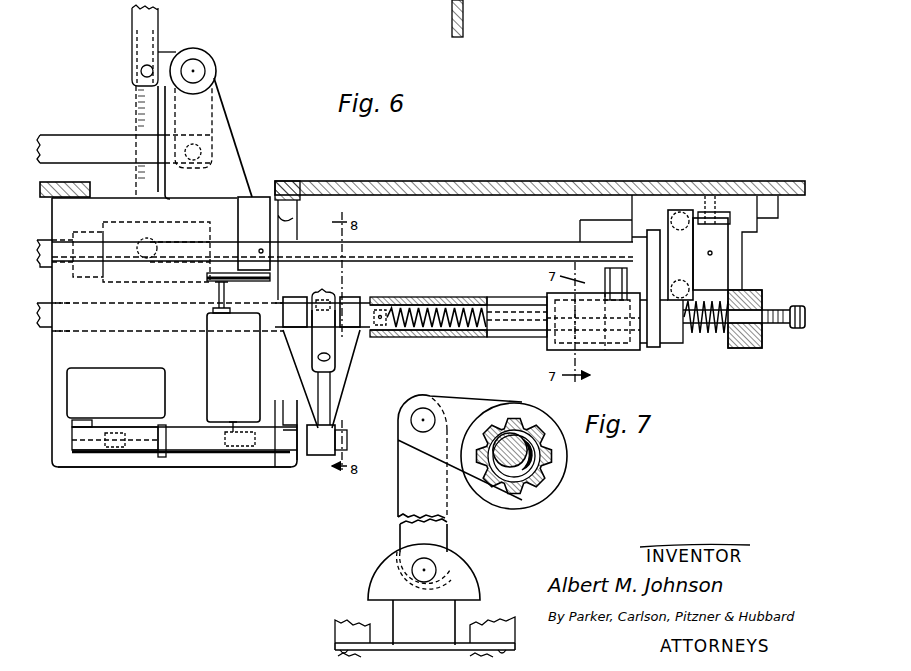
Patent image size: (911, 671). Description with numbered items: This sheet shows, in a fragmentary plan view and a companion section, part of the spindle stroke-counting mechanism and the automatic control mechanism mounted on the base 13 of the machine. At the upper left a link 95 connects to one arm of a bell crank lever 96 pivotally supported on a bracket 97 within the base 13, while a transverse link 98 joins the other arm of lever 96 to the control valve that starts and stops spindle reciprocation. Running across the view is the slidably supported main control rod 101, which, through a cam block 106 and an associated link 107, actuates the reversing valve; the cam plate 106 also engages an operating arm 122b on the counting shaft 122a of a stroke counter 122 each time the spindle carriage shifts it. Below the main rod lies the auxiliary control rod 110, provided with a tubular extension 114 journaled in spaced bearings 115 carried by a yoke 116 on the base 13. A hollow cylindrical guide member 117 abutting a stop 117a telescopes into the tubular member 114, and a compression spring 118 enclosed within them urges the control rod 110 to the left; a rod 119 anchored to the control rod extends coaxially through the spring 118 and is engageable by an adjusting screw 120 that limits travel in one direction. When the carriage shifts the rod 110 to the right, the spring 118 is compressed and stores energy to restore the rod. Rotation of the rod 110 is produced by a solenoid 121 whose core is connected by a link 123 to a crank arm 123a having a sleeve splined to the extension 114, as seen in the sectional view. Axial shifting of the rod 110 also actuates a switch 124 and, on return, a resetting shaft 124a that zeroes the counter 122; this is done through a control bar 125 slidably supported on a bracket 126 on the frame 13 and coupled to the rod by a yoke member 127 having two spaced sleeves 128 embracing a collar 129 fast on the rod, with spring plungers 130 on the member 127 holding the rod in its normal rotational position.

In FIG. 6, the base 13 is at (463, 12).
In FIG. 6, the link 95 is at (84, 142).
In FIG. 6, the bell crank lever 96 is at (216, 100).
In FIG. 6, the bracket 97 is at (234, 148).
In FIG. 6, the transverse link 98 is at (152, 47).
In FIG. 6, the control rod 101 is at (62, 240).
In FIG. 6, the cam block 106 is at (192, 222).
In FIG. 6, the link 107 is at (135, 105).
In FIG. 6, the auxiliary control rod 110 is at (116, 332).
In FIG. 6, the tubular extension 114 is at (444, 338).
In FIG. 6, the bearings 115 is at (552, 296).
In FIG. 6, the yoke 116 is at (584, 228).
In FIG. 7, the yoke 116 is at (336, 630).
In FIG. 6, the hollow cylindrical guide member 117 is at (718, 335).
In FIG. 6, the stop 117a is at (762, 347).
In FIG. 6, the compression spring 118 is at (476, 289).
In FIG. 7, the compression spring 118 is at (540, 458).
In FIG. 6, the rod 119 is at (436, 300).
In FIG. 7, the rod 119 is at (545, 478).
In FIG. 6, the adjusting screw 120 is at (782, 310).
In FIG. 6, the solenoid 121 is at (588, 250).
In FIG. 7, the solenoid 121 is at (338, 655).
In FIG. 6, the stroke counter 122 is at (217, 350).
In FIG. 6, the counting shaft 122a is at (216, 296).
In FIG. 6, the operating arm 122b is at (240, 281).
In FIG. 7, the link 123 is at (401, 536).
In FIG. 7, the crank arm 123a is at (436, 460).
In FIG. 6, the switch 124 is at (114, 370).
In FIG. 7, the switch 124 is at (520, 492).
In FIG. 6, the resetting shaft 124a is at (233, 428).
In FIG. 6, the control bar 125 is at (186, 434).
In FIG. 7, the control bar 125 is at (565, 474).
In FIG. 6, the bracket 126 is at (130, 468).
In FIG. 6, the yoke member 127 is at (340, 386).
In FIG. 6, the sleeves 128 is at (296, 300).
In FIG. 6, the collar 129 is at (330, 284).
In FIG. 6, the spring plungers 130 is at (336, 312).